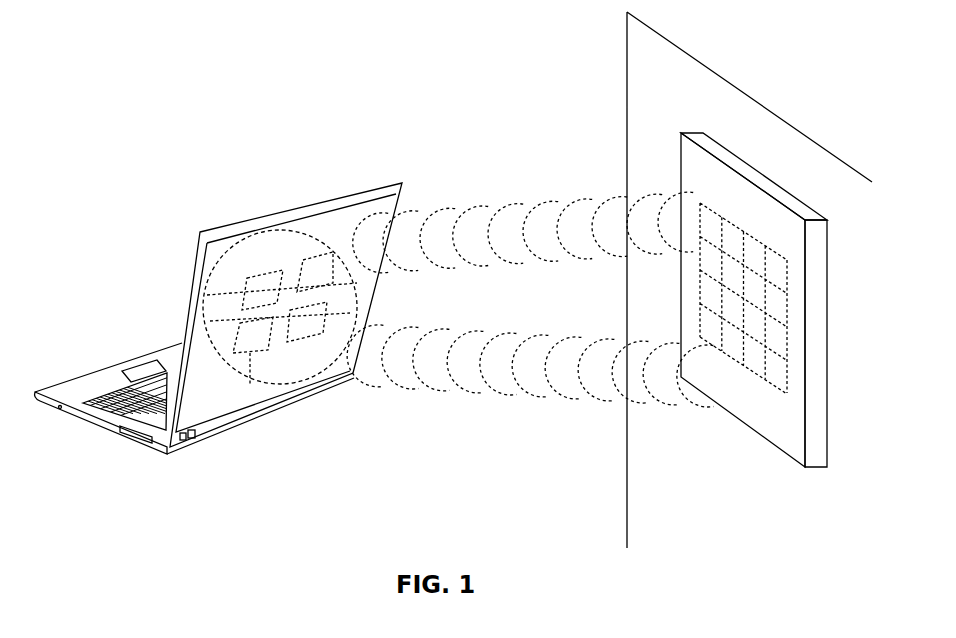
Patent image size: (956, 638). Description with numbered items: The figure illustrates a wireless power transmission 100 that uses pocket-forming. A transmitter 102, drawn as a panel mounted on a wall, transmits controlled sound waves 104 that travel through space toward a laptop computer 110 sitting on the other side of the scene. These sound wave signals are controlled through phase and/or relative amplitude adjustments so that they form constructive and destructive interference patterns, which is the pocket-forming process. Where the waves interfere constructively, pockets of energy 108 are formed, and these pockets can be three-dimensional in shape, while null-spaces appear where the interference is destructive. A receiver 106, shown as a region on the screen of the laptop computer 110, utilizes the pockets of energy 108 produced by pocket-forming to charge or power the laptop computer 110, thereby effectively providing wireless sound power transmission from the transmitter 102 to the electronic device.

The wireless power transmission 100 is at (150, 47).
The transmitter 102 is at (730, 195).
The controlled sound waves 104 is at (514, 203).
The receiver 106 is at (247, 353).
The pockets of energy 108 is at (328, 242).
The laptop computer 110 is at (223, 390).